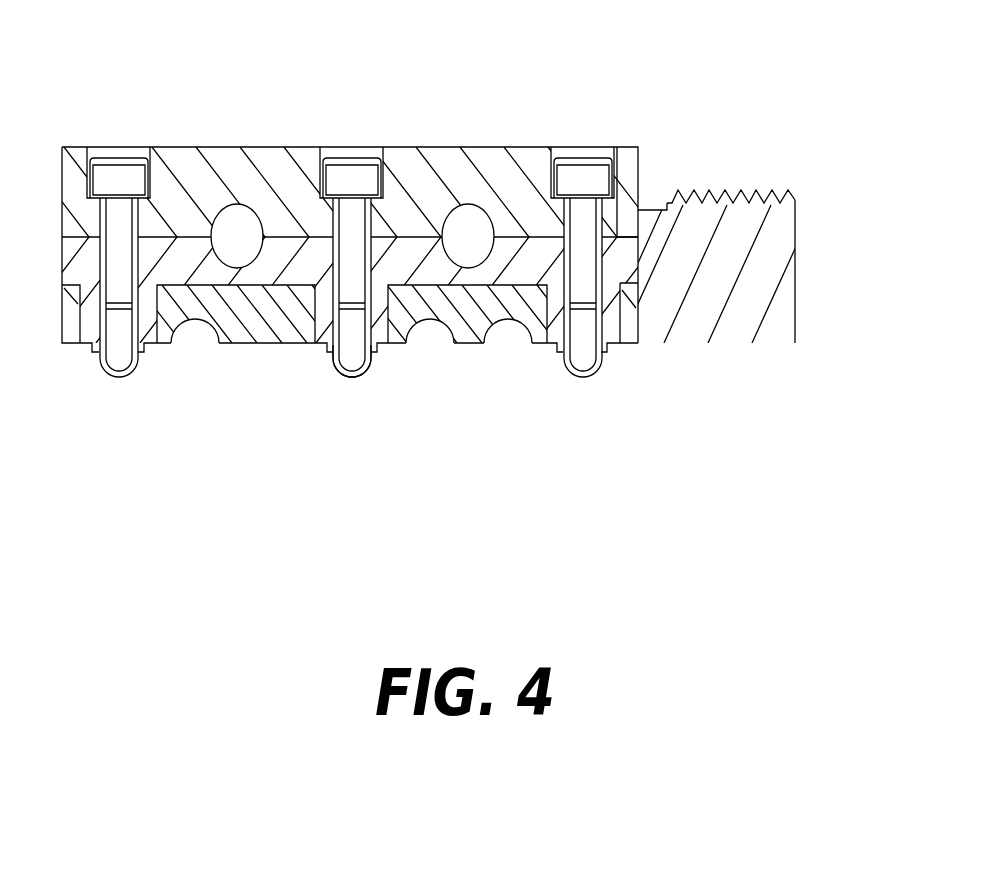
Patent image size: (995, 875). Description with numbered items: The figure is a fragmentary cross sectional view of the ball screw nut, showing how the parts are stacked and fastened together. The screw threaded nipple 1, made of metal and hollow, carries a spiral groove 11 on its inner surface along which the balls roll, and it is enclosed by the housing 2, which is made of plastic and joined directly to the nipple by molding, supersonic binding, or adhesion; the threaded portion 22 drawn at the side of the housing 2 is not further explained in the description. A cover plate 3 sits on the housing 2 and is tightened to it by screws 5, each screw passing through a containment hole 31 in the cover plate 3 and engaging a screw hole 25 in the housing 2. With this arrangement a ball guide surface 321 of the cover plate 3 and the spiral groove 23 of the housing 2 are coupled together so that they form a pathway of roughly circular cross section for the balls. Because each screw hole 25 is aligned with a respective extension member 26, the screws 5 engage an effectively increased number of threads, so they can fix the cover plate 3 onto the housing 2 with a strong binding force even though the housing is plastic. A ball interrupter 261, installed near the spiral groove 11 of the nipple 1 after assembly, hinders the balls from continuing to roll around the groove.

The screw threaded nipple 1 is at (470, 316).
The spiral groove 11 is at (520, 325).
The housing 2 is at (770, 295).
The threads 22 is at (727, 197).
The spiral groove 23 is at (223, 267).
The screw hole 25 is at (572, 322).
The extension member 26 is at (323, 320).
The ball interrupter 261 is at (357, 377).
The cover plate 3 is at (193, 162).
The containment hole 31 is at (618, 172).
The ball guide surface 321 is at (481, 208).
The screw 5 is at (351, 172).